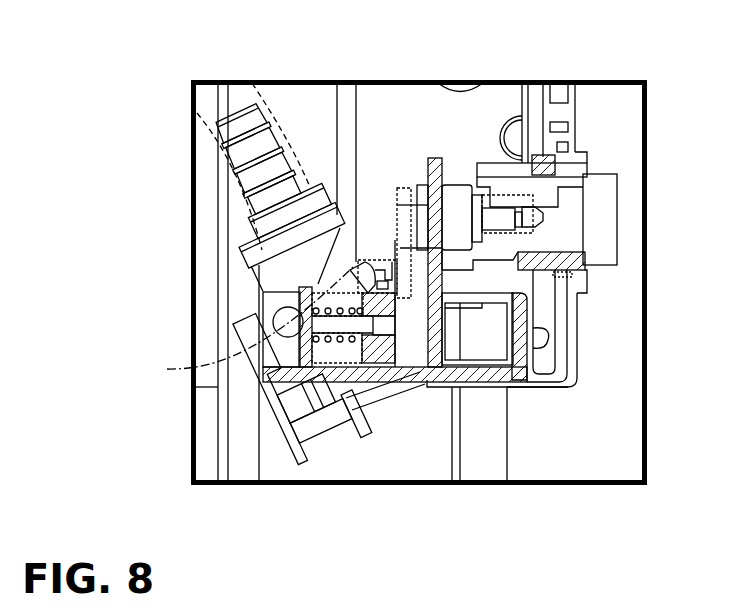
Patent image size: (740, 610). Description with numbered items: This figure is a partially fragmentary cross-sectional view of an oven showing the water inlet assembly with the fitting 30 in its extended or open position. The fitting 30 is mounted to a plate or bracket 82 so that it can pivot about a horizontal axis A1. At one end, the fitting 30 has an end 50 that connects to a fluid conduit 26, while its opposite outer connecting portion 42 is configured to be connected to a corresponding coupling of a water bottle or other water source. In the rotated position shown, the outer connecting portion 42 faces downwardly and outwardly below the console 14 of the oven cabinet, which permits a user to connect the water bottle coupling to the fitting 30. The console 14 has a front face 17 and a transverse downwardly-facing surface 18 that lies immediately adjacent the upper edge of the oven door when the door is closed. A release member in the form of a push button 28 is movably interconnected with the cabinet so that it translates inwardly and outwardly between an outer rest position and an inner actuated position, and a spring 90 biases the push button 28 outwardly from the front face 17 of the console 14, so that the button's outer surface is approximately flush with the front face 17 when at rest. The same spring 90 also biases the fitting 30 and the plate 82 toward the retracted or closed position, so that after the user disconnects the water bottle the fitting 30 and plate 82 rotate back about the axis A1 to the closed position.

The console 14 is at (587, 317).
The front face 17 is at (580, 343).
The transverse downwardly-facing surface 18 is at (540, 390).
The fluid conduit 26 is at (272, 134).
The push button 28 is at (613, 230).
The fitting 30 is at (250, 278).
The outer connecting portion 42 is at (385, 408).
The end 50 is at (257, 173).
The plate or bracket 82 is at (280, 440).
The spring 90 is at (340, 309).
The horizontal axis A1 is at (242, 324).